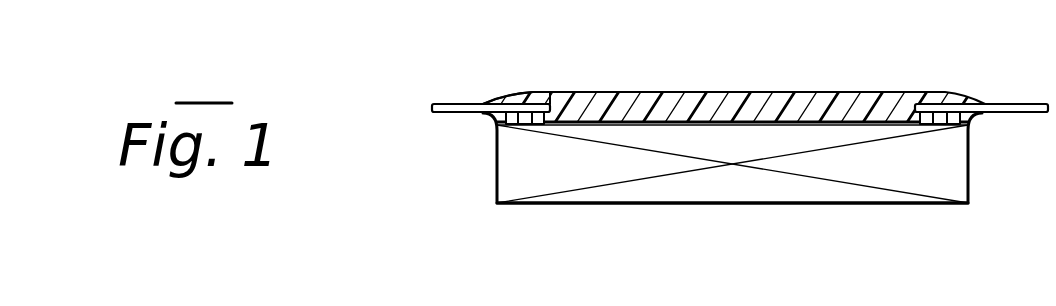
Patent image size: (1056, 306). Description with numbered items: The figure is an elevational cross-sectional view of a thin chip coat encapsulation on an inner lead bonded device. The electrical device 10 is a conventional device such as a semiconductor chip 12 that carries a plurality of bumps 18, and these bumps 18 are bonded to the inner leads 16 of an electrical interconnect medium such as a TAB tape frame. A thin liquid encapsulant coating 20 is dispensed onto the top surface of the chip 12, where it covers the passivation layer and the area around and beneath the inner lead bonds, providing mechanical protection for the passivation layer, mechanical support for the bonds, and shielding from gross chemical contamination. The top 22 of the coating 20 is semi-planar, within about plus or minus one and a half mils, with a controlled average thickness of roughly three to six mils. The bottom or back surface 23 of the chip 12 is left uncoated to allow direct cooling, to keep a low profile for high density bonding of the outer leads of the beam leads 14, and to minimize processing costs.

The electrical device 10 is at (737, 135).
The semiconductor chip 12 is at (968, 170).
The beam leads 14 is at (455, 104).
The inner leads 16 is at (535, 103).
The bumps 18 is at (532, 127).
The encapsulant coating 20 is at (660, 103).
The top of the coating 22 is at (750, 92).
The back surface 23 is at (730, 204).